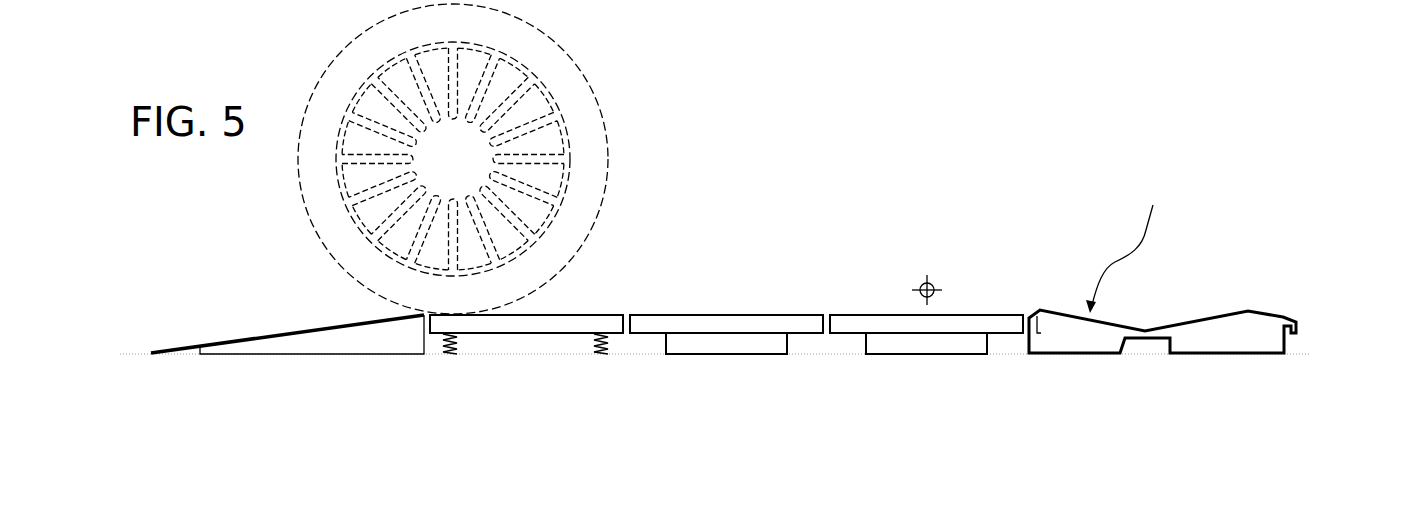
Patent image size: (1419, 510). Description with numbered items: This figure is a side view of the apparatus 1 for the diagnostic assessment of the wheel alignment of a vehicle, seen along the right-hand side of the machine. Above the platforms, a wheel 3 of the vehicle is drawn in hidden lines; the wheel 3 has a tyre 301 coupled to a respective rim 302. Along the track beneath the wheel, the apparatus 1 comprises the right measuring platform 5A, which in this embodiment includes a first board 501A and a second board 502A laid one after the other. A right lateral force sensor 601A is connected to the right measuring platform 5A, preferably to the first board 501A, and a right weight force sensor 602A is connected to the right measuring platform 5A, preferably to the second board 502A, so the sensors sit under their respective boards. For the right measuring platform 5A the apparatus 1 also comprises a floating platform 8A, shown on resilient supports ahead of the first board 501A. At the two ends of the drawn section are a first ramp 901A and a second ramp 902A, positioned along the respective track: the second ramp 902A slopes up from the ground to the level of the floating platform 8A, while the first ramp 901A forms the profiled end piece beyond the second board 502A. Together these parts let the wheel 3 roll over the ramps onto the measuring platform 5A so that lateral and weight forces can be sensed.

The apparatus 1 is at (1162, 259).
The wheel 3 is at (519, 159).
The tyre 301 is at (588, 194).
The rim 302 is at (441, 163).
The right measuring platform 5A is at (709, 298).
The floating platform 8A is at (506, 322).
The first board 501A is at (724, 323).
The second board 502A is at (970, 322).
The right lateral force sensor 601A is at (678, 345).
The right weight force sensor 602A is at (948, 342).
The first ramp 901A is at (1062, 333).
The second ramp 902A is at (283, 334).